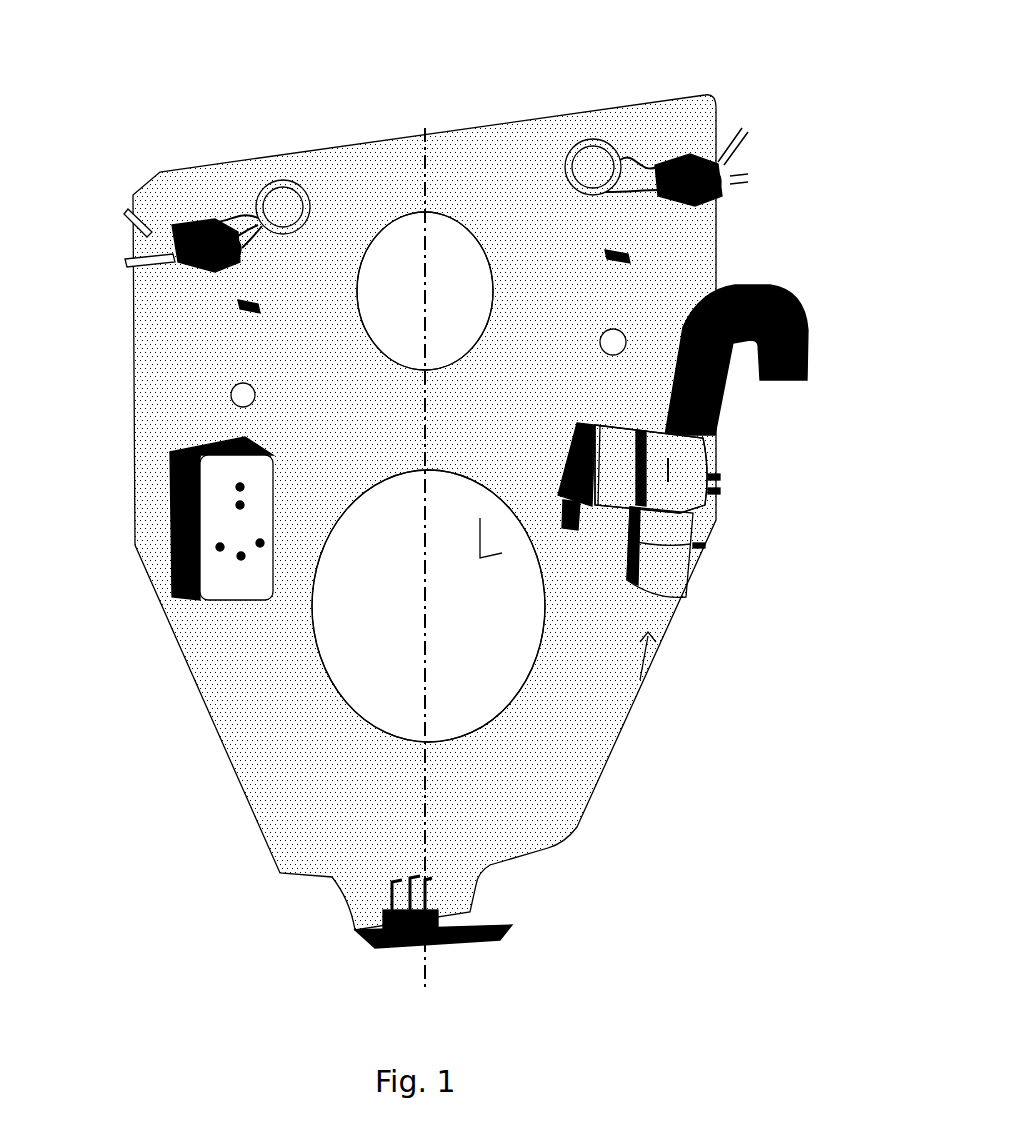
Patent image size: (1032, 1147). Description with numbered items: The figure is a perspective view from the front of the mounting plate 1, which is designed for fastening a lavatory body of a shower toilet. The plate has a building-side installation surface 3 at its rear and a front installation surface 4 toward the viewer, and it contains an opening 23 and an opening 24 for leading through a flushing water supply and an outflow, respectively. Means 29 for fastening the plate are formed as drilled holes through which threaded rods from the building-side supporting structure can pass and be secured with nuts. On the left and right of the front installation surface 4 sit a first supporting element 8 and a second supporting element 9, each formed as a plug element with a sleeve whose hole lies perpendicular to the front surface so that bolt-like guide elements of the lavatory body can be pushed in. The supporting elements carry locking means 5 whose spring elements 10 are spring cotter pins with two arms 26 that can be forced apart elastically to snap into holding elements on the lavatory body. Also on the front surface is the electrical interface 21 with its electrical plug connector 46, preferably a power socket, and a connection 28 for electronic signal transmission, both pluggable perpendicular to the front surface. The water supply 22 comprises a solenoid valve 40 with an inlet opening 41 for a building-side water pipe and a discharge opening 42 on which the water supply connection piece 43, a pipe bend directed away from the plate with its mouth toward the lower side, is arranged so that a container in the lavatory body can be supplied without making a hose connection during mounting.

The mounting plate 1 is at (424, 501).
The building-side installation surface 3 is at (424, 518).
The front installation surface 4 is at (474, 146).
The locking means 5 is at (145, 247).
The first supporting element 8 is at (186, 269).
The second supporting element 9 is at (724, 158).
The spring elements 10 is at (284, 187).
The electrical interface 21 is at (166, 550).
The water supply 22 is at (717, 441).
The opening 23 is at (472, 288).
The opening 24 is at (493, 632).
The arms 26 is at (204, 209).
The connection for electronic signal transmission 28 is at (385, 938).
The means for fastening 29 is at (236, 397).
The solenoid valve 40 is at (682, 480).
The inlet opening 41 is at (670, 560).
The discharge opening 42 is at (703, 445).
The water supply connection piece 43 is at (797, 344).
The electrical plug connector 46 is at (225, 562).